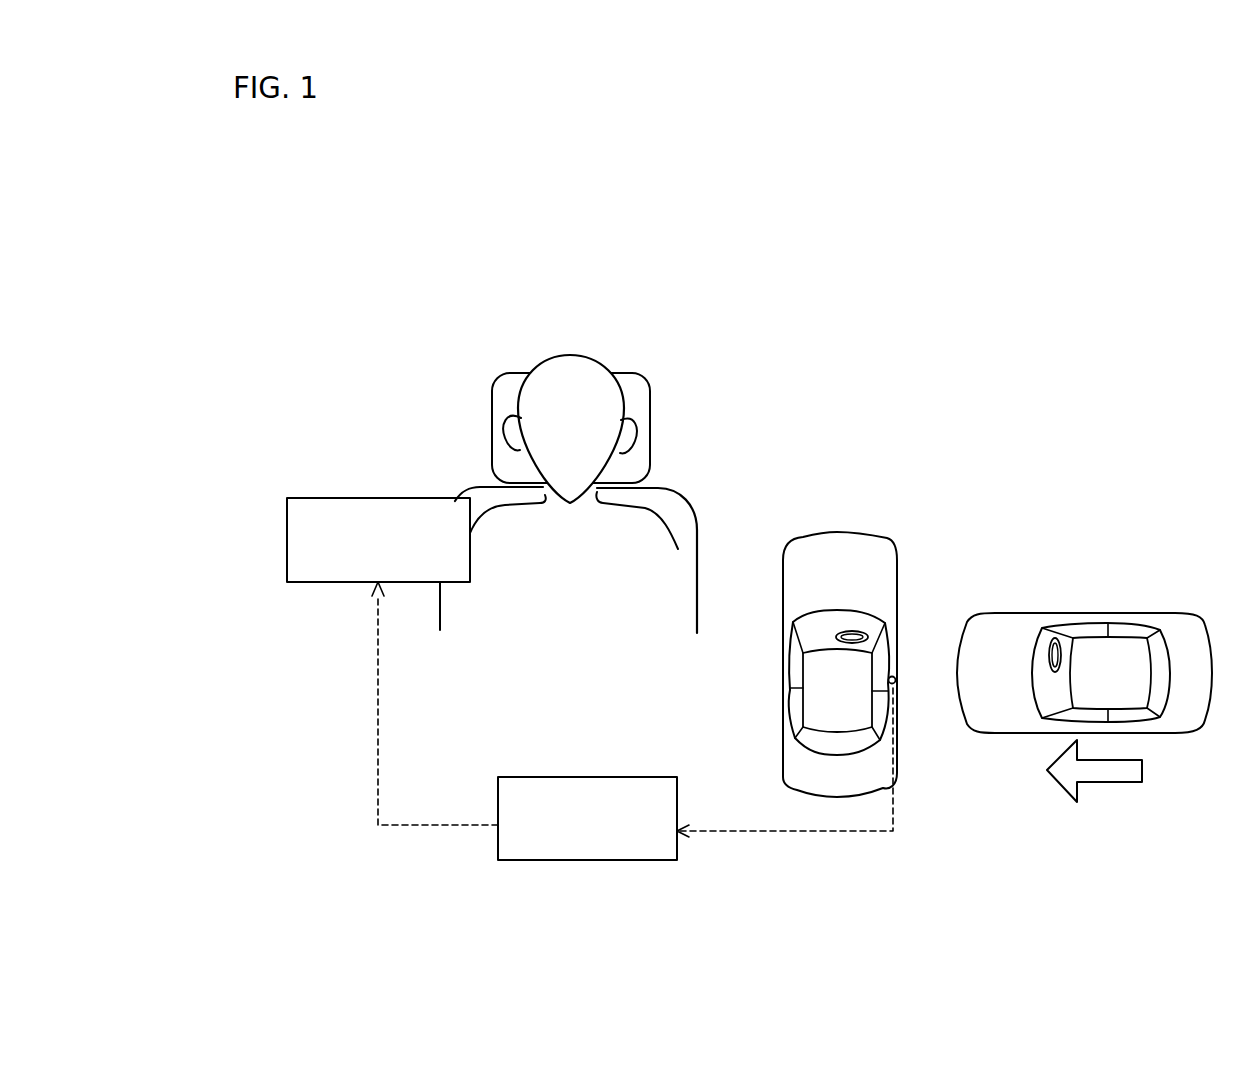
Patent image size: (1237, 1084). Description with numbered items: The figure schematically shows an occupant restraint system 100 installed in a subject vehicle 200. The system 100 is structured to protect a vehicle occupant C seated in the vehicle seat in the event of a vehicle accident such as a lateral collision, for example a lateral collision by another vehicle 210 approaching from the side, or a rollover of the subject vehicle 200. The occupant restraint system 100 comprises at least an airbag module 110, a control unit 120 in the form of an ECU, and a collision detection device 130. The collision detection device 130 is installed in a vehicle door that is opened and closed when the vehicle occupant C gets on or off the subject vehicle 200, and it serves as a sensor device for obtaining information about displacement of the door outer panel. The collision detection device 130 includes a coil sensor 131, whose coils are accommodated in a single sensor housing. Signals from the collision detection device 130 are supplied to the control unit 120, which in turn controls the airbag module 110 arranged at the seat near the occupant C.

The occupant restraint system 100 is at (774, 452).
The airbag module 110 is at (283, 542).
The control unit 120 is at (617, 860).
The collision detection device 130 is at (895, 674).
The coil sensor 131 is at (892, 680).
The subject vehicle 200 is at (878, 532).
The another vehicle 210 is at (1111, 606).
The vehicle occupant C is at (658, 505).